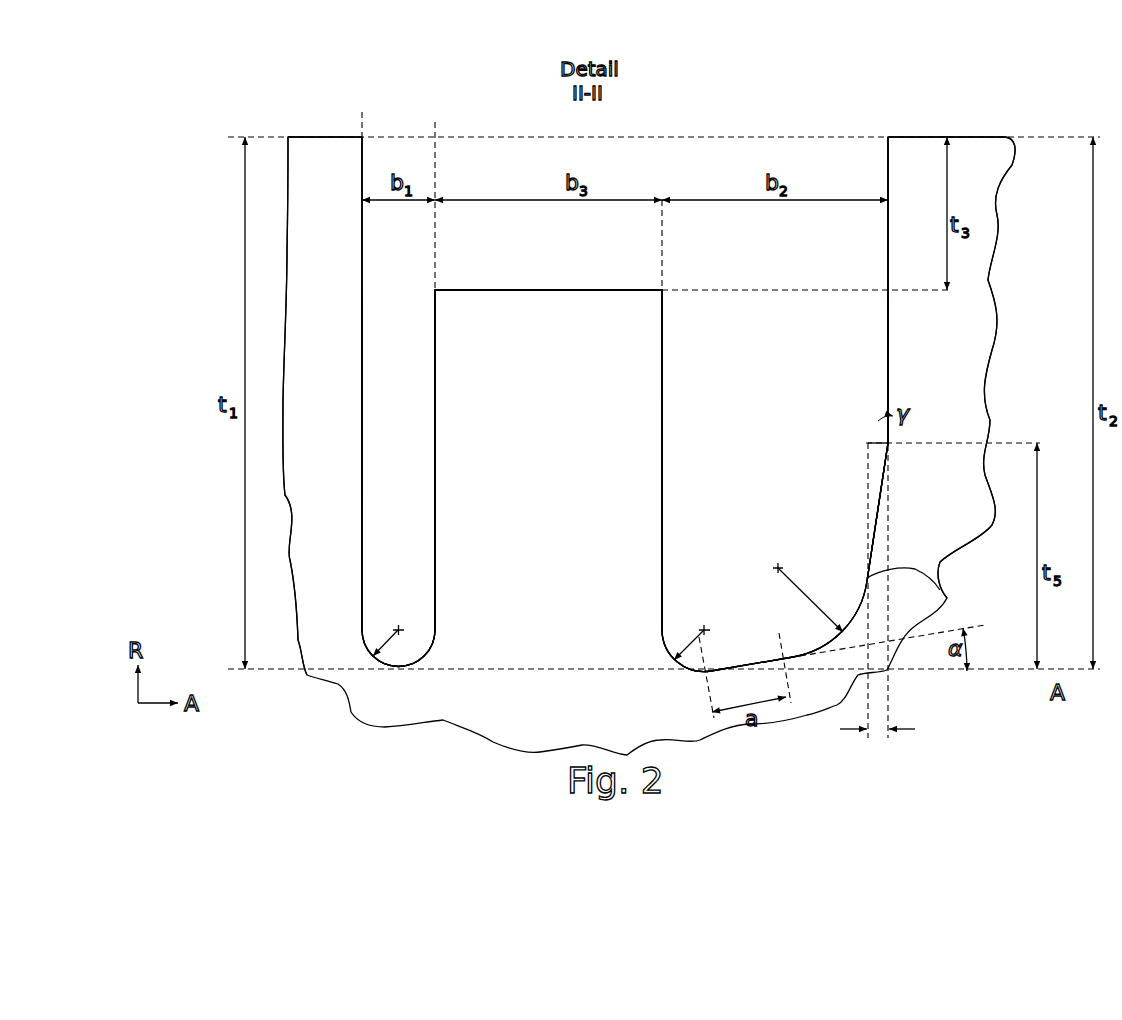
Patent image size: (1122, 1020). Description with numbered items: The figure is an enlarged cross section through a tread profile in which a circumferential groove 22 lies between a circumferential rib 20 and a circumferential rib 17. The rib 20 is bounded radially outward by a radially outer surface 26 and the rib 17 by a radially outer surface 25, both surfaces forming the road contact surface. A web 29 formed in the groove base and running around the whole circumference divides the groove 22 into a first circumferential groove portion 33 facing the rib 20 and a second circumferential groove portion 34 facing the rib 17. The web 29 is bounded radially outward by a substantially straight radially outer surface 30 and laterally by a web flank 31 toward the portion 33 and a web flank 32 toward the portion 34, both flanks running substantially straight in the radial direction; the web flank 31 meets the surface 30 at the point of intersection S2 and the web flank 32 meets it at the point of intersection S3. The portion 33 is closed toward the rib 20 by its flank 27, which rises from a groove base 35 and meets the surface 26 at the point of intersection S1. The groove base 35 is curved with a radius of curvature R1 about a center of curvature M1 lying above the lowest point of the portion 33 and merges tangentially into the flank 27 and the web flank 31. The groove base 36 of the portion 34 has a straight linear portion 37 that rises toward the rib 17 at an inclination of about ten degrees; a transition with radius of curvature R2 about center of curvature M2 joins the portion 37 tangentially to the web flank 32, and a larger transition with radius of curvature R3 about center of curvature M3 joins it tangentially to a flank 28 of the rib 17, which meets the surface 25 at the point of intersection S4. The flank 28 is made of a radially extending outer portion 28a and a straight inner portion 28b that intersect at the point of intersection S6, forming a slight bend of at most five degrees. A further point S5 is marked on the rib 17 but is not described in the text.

The circumferential rib 17 is at (935, 152).
The circumferential rib 20 is at (297, 147).
The circumferential groove 22 is at (684, 111).
The radially outer surface 25 is at (908, 136).
The radially outer surface 26 is at (350, 136).
The flank 27 is at (363, 303).
The flank 28 is at (888, 340).
The portion 28a is at (887, 392).
The portion 28b is at (881, 494).
The web 29 is at (565, 290).
The radially outer surface 30 is at (505, 290).
The web flank 31 is at (434, 402).
The web flank 32 is at (663, 430).
The first circumferential groove portion 33 is at (387, 263).
The second circumferential groove portion 34 is at (740, 298).
The groove base 35 is at (406, 664).
The groove base 36 is at (757, 655).
The linear portion 37 is at (710, 668).
The point of intersection S1 is at (362, 136).
The point of intersection S2 is at (437, 290).
The point of intersection S3 is at (663, 291).
The point of intersection S4 is at (888, 136).
The fifth surface S5 is at (940, 592).
The point of intersection S6 is at (890, 442).
The center of curvature M1 is at (398, 626).
The center of curvature M2 is at (704, 626).
The center of curvature M3 is at (781, 555).
The radius of curvature R1 is at (384, 632).
The radius of curvature R2 is at (689, 637).
The radius of curvature R3 is at (810, 600).